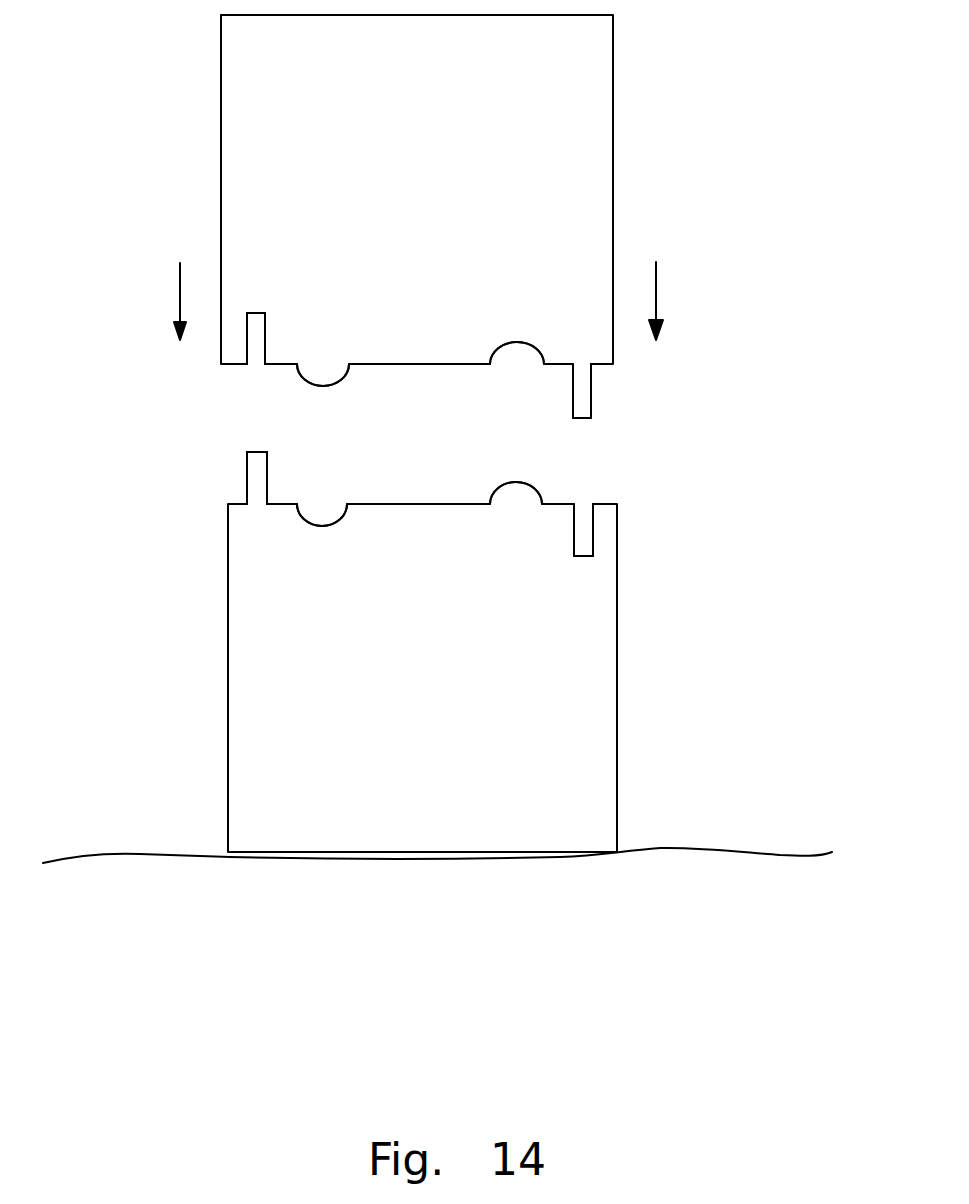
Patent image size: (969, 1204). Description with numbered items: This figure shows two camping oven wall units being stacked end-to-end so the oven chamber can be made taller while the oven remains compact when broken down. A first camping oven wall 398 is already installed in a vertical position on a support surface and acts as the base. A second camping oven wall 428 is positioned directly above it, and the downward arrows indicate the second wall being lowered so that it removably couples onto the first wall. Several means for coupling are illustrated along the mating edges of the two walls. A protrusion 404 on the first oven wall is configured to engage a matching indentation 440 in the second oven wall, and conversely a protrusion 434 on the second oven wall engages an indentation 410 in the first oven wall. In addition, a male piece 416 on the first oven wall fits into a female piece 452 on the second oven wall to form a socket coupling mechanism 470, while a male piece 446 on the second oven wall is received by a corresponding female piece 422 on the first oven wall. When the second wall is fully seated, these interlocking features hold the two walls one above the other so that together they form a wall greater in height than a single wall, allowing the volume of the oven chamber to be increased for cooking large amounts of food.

The second camping oven wall 428 is at (442, 178).
The first camping oven wall 398 is at (450, 727).
The indentation 440 is at (517, 345).
The female piece 452 is at (257, 328).
The protrusion 434 is at (337, 384).
The male piece 446 is at (592, 399).
The protrusion 404 is at (537, 490).
The male piece 416 is at (248, 492).
The indentation 410 is at (337, 520).
The rectangular slot of lower block 422 is at (593, 532).
The socket coupling mechanism 470 is at (244, 378).